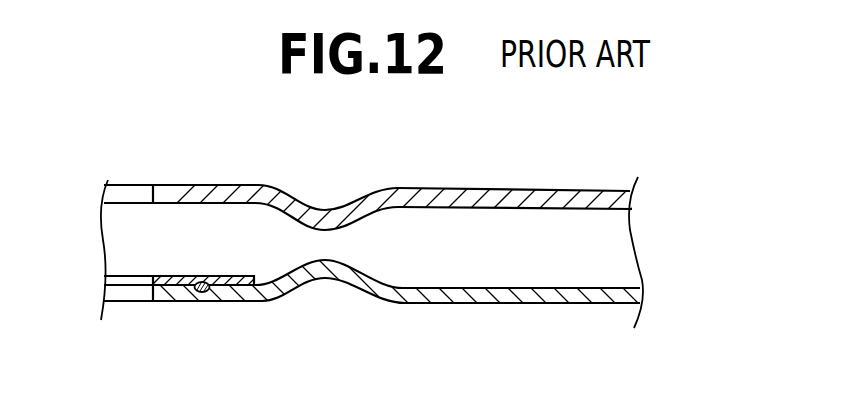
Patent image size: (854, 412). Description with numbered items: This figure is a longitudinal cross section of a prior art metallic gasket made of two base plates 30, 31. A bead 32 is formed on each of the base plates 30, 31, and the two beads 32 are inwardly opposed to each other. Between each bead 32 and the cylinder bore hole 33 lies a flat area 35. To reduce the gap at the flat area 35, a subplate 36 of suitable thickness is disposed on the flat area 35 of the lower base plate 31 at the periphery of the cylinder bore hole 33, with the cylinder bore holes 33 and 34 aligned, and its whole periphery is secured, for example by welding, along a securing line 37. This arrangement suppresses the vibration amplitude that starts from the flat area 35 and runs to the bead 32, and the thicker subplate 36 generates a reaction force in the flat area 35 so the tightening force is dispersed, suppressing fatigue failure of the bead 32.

The base plate 30 is at (549, 192).
The base plate 31 is at (565, 301).
The bead 32 is at (323, 217).
The cylinder bore hole 33 is at (152, 198).
The cylinder bore hole 34 is at (144, 279).
The flat area 35 is at (209, 193).
The subplate 36 is at (233, 279).
The securing line 37 is at (194, 300).